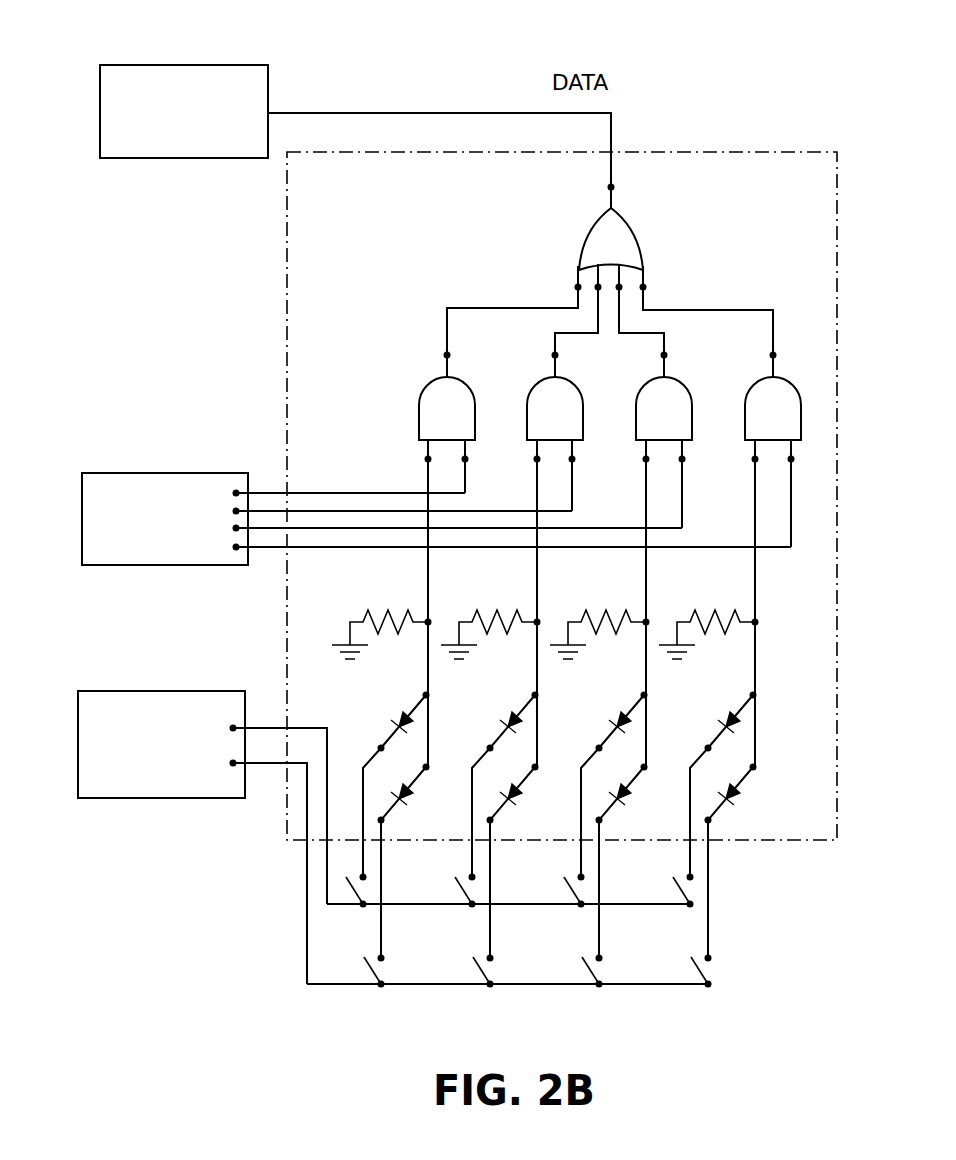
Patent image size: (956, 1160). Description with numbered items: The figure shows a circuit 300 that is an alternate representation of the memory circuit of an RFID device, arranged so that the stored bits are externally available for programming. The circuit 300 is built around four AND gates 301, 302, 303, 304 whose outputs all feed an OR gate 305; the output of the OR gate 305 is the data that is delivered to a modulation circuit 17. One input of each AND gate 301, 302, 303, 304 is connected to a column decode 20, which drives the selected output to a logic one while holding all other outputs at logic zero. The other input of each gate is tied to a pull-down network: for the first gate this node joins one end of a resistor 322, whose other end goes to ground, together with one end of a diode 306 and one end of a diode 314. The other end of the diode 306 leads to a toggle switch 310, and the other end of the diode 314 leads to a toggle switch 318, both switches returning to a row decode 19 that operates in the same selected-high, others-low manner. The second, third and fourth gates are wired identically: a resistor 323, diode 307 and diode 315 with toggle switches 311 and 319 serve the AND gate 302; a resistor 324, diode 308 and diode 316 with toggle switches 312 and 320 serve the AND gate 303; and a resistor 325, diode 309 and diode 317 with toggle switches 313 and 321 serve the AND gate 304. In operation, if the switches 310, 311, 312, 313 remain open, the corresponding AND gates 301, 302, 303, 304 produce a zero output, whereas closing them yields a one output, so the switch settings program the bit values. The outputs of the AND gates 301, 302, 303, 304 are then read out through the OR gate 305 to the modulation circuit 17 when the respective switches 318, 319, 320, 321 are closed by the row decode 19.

The modulation circuit 17 is at (188, 65).
The row decode 19 is at (180, 691).
The column decode 20 is at (170, 473).
The circuit 300 is at (778, 150).
The AND gate 301 is at (418, 404).
The AND gate 302 is at (526, 416).
The AND gate 303 is at (636, 419).
The AND gate 304 is at (746, 419).
The OR gate 305 is at (582, 250).
The diode 306 is at (390, 715).
The diode 307 is at (500, 715).
The diode 308 is at (613, 717).
The diode 309 is at (723, 717).
The toggle switch 310 is at (350, 890).
The toggle switch 311 is at (458, 893).
The toggle switch 312 is at (567, 893).
The toggle switch 313 is at (675, 893).
The diode 314 is at (412, 804).
The diode 315 is at (522, 804).
The diode 316 is at (630, 806).
The diode 317 is at (740, 806).
The toggle switch 318 is at (368, 970).
The toggle switch 319 is at (477, 972).
The toggle switch 320 is at (580, 972).
The toggle switch 321 is at (692, 973).
The resistor 322 is at (388, 610).
The resistor 323 is at (510, 610).
The resistor 324 is at (619, 610).
The resistor 325 is at (728, 610).